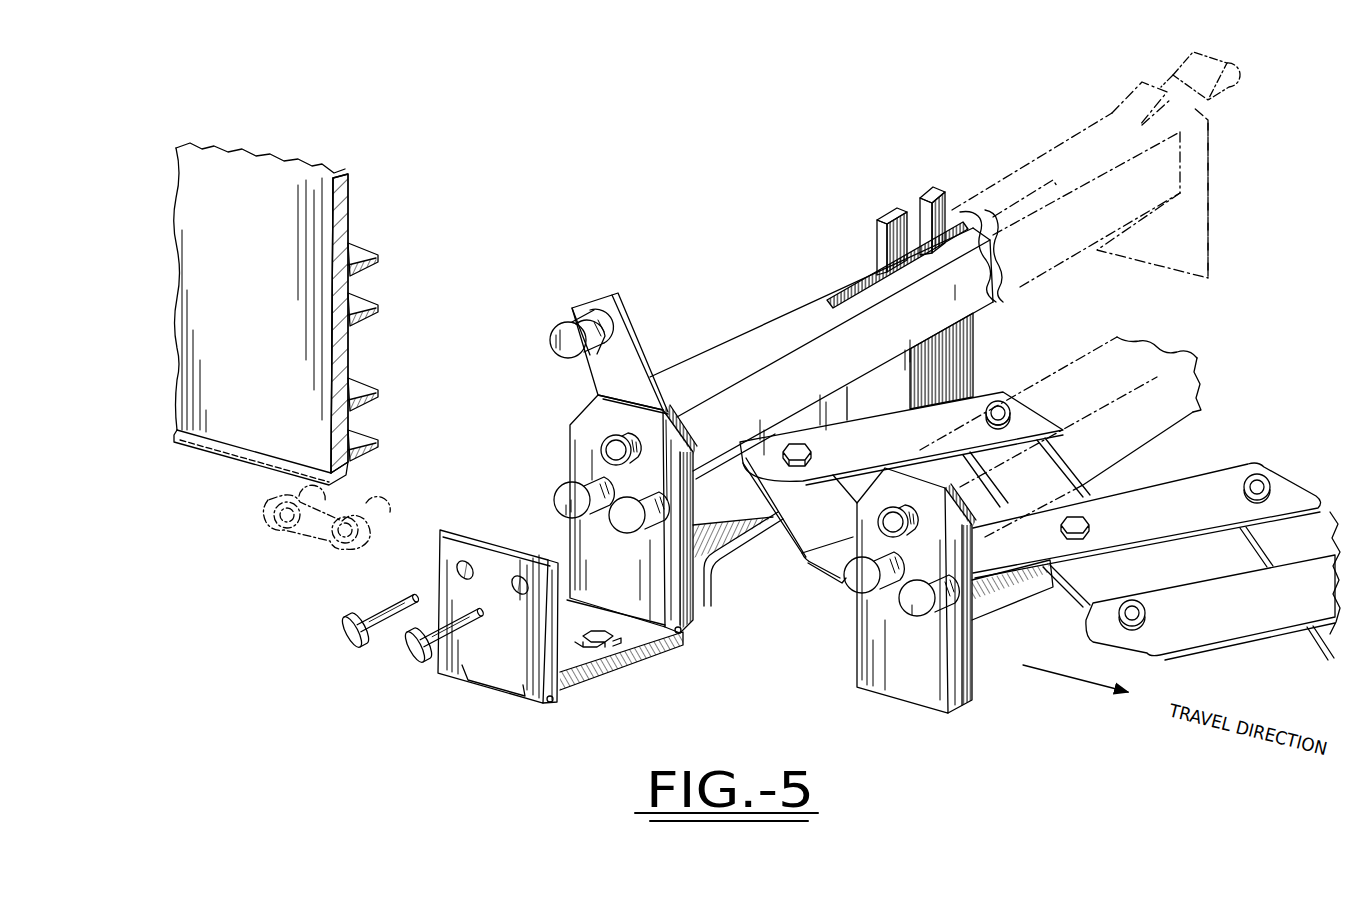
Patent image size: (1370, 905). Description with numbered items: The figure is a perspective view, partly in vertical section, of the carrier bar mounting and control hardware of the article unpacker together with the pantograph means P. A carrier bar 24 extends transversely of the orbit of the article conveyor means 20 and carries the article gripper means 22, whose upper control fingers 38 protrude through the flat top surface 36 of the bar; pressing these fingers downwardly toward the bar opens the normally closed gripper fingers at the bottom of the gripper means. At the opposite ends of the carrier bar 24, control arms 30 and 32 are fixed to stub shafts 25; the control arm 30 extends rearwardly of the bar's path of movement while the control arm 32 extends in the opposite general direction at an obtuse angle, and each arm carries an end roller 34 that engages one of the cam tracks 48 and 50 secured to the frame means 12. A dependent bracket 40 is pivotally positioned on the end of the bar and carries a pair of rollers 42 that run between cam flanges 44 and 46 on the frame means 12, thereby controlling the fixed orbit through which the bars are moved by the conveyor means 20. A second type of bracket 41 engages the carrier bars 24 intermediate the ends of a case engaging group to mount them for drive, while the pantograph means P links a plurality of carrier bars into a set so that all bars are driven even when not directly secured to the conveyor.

The frame means 12 is at (226, 265).
The cam track 48 is at (368, 252).
The cam track 50 is at (370, 300).
The cam flange 44 is at (370, 390).
The cam flange 46 is at (372, 443).
The article conveyor means 20 is at (270, 539).
The article gripper means 22 is at (975, 346).
The carrier bar 24 is at (1080, 140).
The stub shaft 25 is at (606, 447).
The control arm 30 is at (617, 345).
The control arm 32 is at (1207, 107).
The end roller 34 is at (557, 324).
The flat top surface 36 is at (787, 315).
The control finger 38 is at (920, 198).
The dependent bracket 40 is at (689, 634).
The bracket 41 is at (857, 668).
The roller 42 is at (618, 522).
The pantograph means P is at (803, 568).